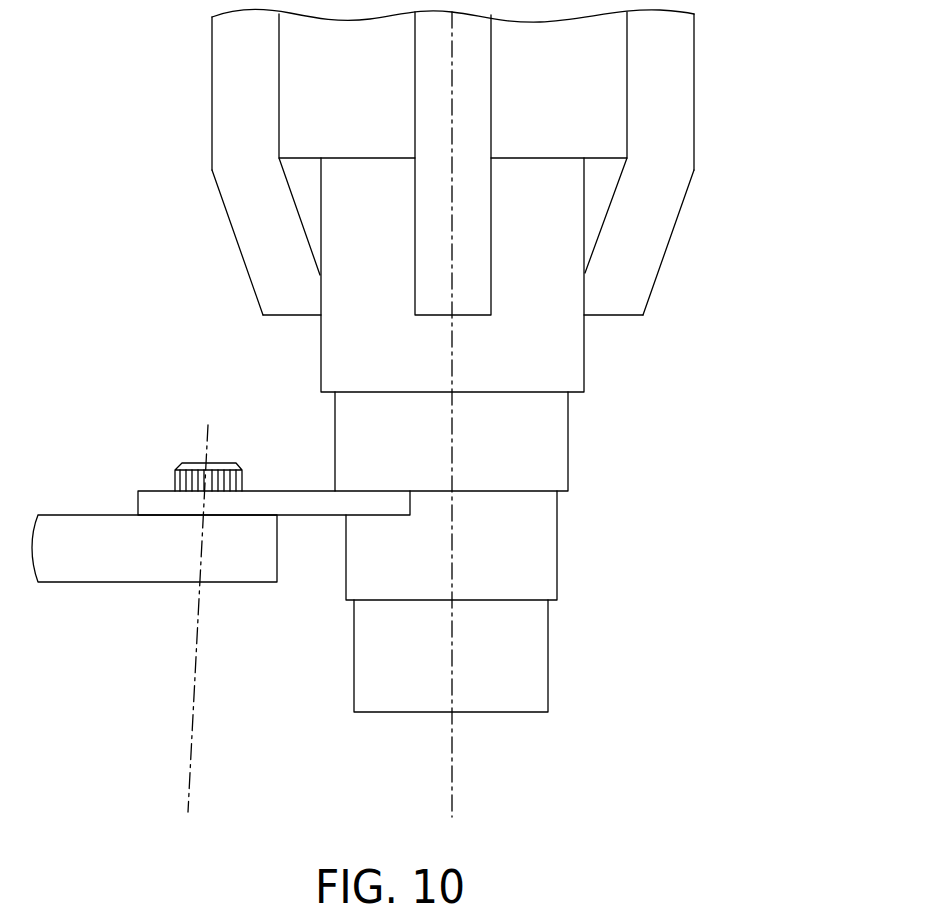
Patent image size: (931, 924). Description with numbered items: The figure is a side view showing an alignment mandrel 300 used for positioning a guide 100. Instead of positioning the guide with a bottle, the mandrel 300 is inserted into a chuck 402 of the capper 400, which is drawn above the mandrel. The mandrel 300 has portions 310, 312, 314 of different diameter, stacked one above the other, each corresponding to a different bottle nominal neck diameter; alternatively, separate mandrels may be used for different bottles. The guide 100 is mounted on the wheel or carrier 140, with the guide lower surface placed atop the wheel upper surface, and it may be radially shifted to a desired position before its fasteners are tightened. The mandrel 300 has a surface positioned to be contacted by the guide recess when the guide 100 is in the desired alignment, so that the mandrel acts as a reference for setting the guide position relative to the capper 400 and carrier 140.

The capper 400 is at (707, 62).
The chuck 402 is at (678, 247).
The mandrel 300 is at (555, 538).
The mandrel portion 314 is at (553, 432).
The mandrel portion 312 is at (545, 552).
The mandrel portion 310 is at (515, 662).
The guide 100 is at (303, 492).
The carrier 140 is at (88, 522).